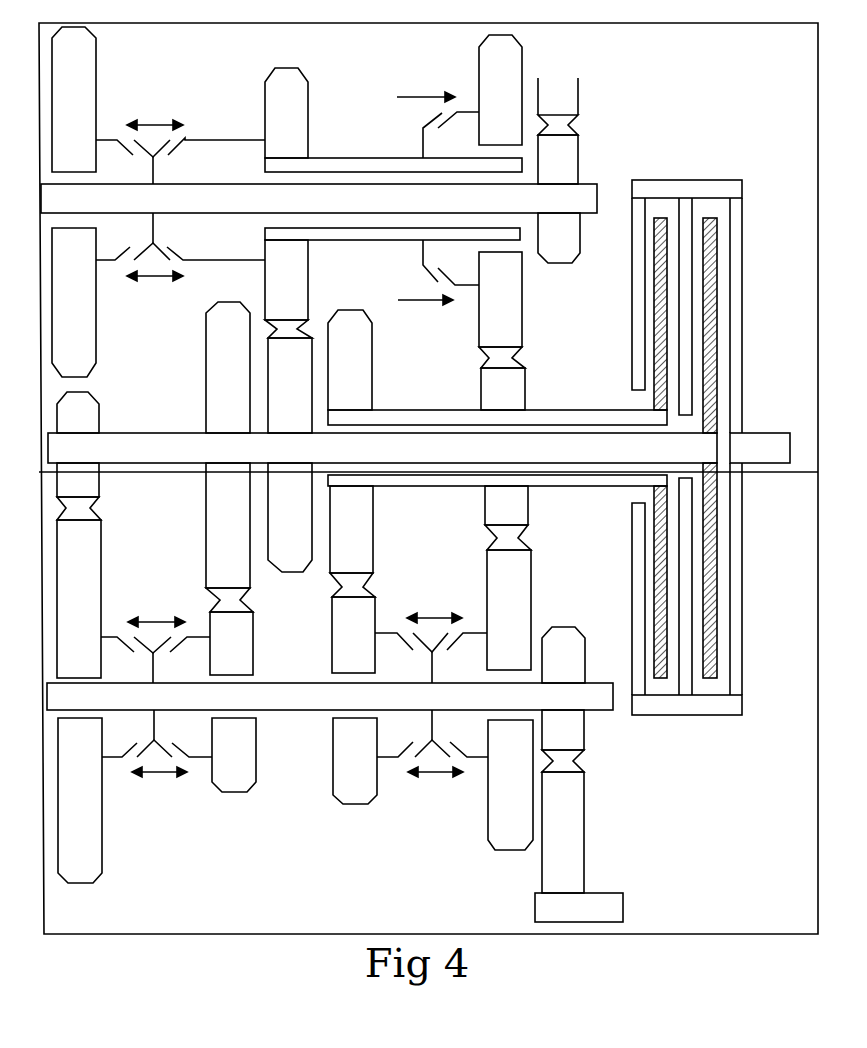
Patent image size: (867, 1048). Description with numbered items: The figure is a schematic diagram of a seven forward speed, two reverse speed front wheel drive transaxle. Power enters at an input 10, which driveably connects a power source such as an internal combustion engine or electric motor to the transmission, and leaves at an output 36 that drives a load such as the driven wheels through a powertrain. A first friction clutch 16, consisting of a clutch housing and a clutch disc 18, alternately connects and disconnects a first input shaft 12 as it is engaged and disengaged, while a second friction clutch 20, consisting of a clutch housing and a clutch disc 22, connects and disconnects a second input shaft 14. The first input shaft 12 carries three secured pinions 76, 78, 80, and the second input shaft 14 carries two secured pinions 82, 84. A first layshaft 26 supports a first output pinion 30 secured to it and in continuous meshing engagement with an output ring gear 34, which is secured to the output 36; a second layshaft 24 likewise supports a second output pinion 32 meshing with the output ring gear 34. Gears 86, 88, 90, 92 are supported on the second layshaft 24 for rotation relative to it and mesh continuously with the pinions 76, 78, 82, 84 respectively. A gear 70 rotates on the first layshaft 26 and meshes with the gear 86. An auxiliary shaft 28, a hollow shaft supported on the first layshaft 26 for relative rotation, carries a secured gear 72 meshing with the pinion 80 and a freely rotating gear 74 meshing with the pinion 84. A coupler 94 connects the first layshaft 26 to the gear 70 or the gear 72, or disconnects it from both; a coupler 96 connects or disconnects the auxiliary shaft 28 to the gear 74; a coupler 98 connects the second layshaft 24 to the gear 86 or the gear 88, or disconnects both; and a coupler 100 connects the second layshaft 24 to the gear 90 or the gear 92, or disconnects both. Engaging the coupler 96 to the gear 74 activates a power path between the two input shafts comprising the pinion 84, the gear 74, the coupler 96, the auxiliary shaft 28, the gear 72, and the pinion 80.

The input 10 is at (760, 448).
The first input shaft 12 is at (382, 448).
The second input shaft 14 is at (583, 417).
The first friction clutch 16 is at (708, 185).
The clutch disc 18 is at (710, 308).
The second friction clutch 20 is at (655, 185).
The clutch disc 22 is at (655, 333).
The second layshaft 24 is at (330, 696).
The first layshaft 26 is at (319, 198).
The auxiliary shaft 28 is at (354, 162).
The first output pinion 30 is at (559, 199).
The second output pinion 32 is at (563, 655).
The output ring gear 34 is at (561, 485).
The output 36 is at (579, 907).
The gear 70 is at (74, 302).
The gear 72 is at (392, 283).
The gear 74 is at (502, 310).
The pinion 76 is at (79, 456).
The pinion 78 is at (229, 457).
The pinion 80 is at (290, 455).
The pinion 82 is at (350, 360).
The pinion 84 is at (503, 389).
The gear 86 is at (79, 701).
The gear 88 is at (233, 702).
The gear 90 is at (353, 645).
The gear 92 is at (509, 668).
The coupler 94 is at (153, 118).
The coupler 96 is at (420, 95).
The coupler 98 is at (155, 618).
The coupler 100 is at (433, 618).